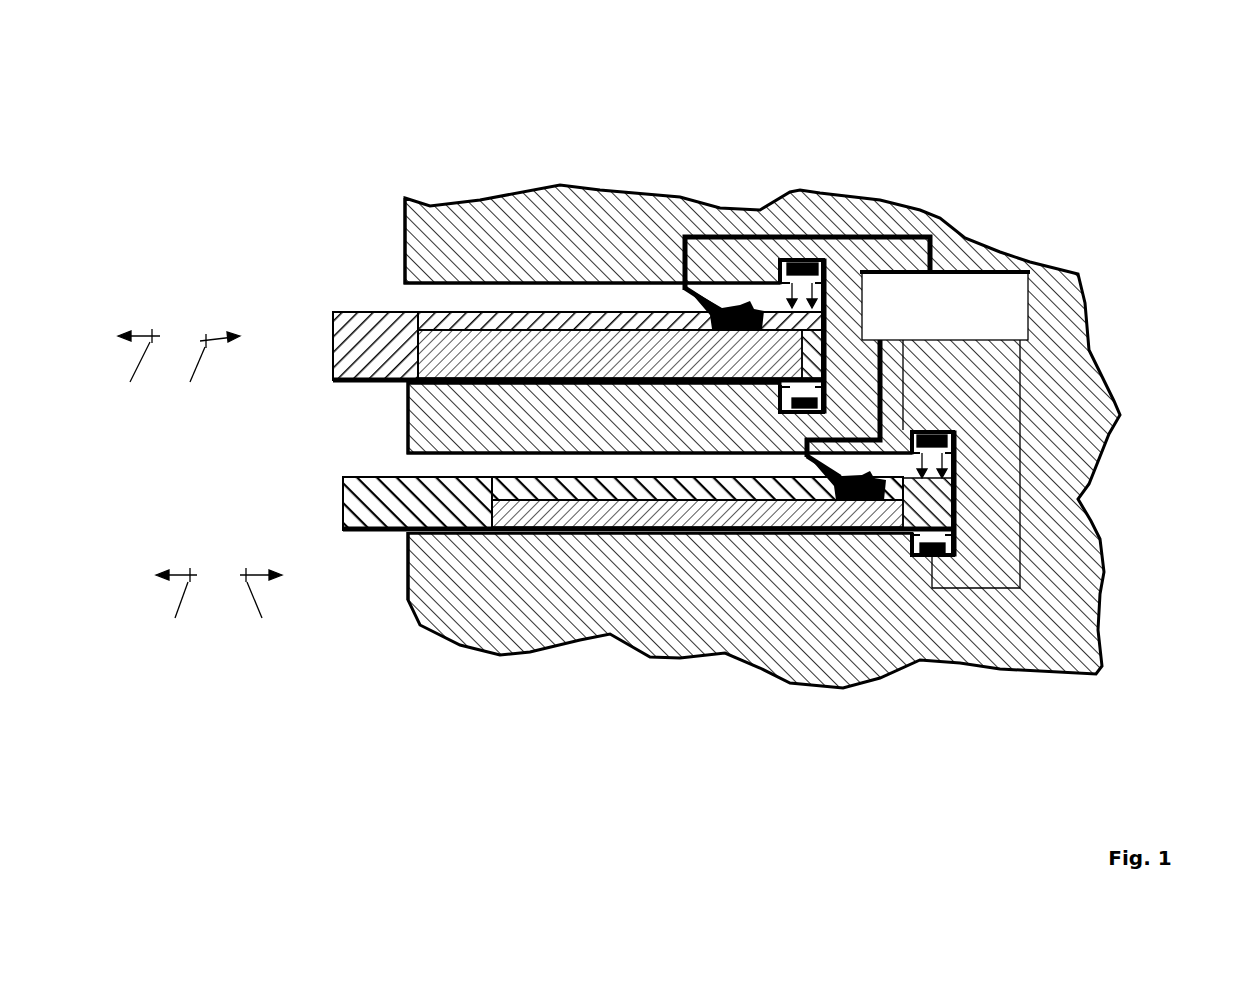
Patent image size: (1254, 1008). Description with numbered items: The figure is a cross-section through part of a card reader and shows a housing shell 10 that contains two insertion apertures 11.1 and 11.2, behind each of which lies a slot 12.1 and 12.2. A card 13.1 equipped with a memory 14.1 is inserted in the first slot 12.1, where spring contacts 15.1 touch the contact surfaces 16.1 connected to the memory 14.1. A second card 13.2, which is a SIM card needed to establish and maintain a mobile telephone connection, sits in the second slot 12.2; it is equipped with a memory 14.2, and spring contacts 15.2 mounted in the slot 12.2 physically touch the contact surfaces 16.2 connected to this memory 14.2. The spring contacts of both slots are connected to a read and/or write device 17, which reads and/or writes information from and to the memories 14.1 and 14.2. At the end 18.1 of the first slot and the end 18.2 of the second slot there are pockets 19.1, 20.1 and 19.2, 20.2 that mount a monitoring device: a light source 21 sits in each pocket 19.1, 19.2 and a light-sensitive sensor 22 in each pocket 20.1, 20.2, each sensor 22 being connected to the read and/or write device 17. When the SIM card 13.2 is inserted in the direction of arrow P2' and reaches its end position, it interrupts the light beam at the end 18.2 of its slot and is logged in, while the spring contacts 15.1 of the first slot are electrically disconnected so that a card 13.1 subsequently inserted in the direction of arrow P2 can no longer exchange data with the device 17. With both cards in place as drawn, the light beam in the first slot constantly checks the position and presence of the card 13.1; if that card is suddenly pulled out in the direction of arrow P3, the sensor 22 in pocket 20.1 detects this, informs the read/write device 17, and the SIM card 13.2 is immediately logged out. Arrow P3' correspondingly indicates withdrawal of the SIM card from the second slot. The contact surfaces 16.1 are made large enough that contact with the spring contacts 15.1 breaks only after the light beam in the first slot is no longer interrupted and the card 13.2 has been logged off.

The housing shell 10 is at (920, 222).
The first insertion aperture 11.1 is at (418, 298).
The second insertion aperture 11.2 is at (418, 463).
The first slot 12.1 is at (488, 297).
The second slot 12.2 is at (410, 558).
The card 13.1 is at (335, 355).
The SIM card 13.2 is at (345, 513).
The memory 14.1 is at (580, 335).
The memory 14.2 is at (535, 520).
The spring contacts 15.1 is at (703, 300).
The spring contacts 15.2 is at (827, 455).
The contact surfaces 16.1 is at (722, 328).
The contact surfaces 16.2 is at (838, 498).
The read and/or write device 17 is at (945, 306).
The end of first slot 18.1 is at (850, 330).
The end of second slot 18.2 is at (1050, 556).
The pocket 19.1 is at (757, 226).
The pocket 19.2 is at (955, 455).
The pocket 20.1 is at (788, 408).
The pocket 20.2 is at (918, 557).
The light source 21 is at (800, 262).
The light-sensitive sensor 22 is at (797, 410).
The arrow P2 is at (204, 376).
The arrow P3 is at (130, 376).
The arrow P2' is at (261, 621).
The arrow P3' is at (178, 619).